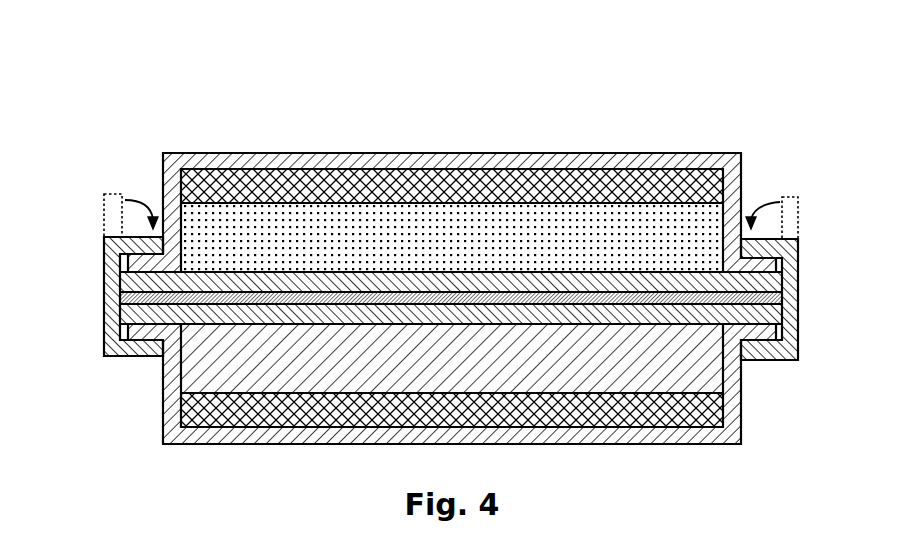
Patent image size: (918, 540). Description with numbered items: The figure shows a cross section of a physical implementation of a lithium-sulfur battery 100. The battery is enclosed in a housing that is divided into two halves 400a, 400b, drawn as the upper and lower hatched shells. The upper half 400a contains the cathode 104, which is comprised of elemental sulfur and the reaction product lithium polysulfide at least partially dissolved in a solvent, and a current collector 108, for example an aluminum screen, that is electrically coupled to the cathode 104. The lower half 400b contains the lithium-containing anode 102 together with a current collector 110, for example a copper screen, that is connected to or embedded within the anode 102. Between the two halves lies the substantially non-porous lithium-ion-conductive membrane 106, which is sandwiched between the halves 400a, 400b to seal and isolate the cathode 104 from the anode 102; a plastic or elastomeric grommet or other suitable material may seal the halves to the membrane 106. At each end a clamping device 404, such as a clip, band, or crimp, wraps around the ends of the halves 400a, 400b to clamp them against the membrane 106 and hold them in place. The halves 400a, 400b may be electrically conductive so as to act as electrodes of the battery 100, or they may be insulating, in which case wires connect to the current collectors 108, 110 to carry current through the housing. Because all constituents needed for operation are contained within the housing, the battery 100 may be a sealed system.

The lithium-sulfur battery 100 is at (452, 260).
The housing half 400a is at (692, 153).
The housing half 400b is at (695, 438).
The current collector 108 is at (728, 188).
The cathode 104 is at (710, 234).
The substantially non-porous lithium-ion-conductive membrane 106 is at (807, 273).
The lithium-containing anode 102 is at (710, 382).
The current collector 110 is at (710, 413).
The clamping device 404 is at (112, 268).